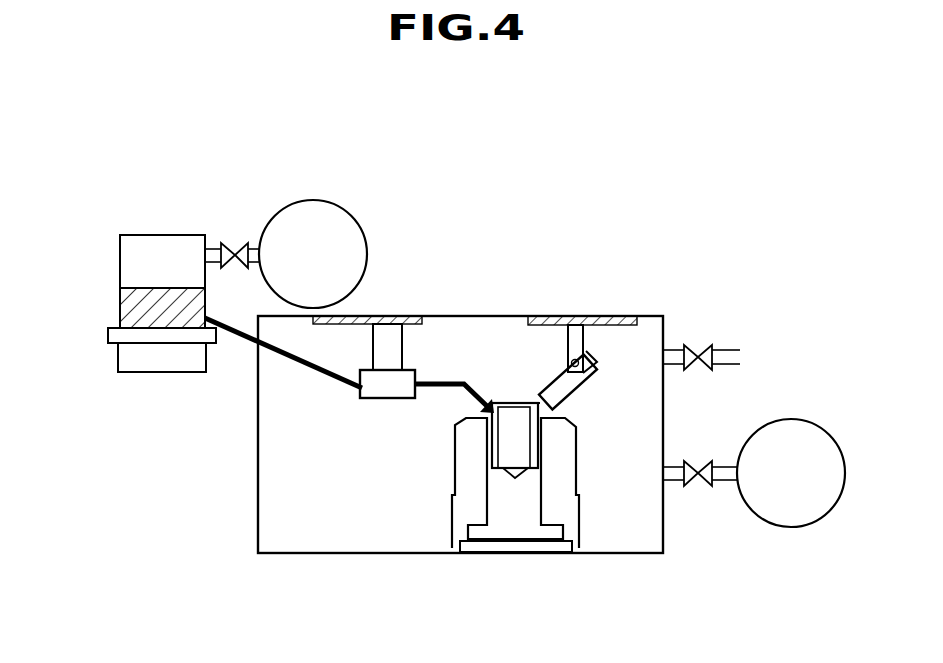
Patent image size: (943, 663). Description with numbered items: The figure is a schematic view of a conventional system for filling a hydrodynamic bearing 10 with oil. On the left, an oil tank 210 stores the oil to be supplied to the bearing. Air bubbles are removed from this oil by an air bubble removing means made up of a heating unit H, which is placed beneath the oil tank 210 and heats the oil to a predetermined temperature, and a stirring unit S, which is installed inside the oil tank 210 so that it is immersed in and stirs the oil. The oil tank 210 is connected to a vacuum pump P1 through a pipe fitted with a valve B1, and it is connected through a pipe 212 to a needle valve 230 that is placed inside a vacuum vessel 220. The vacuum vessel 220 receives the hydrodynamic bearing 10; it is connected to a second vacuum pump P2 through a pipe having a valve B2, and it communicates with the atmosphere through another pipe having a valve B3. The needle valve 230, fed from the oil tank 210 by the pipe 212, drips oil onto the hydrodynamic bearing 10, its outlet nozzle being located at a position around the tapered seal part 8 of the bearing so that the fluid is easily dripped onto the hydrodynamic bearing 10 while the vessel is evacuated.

The oil tank 210 is at (116, 262).
The stirring unit S is at (128, 314).
The heating unit H is at (112, 336).
The pipe 212 is at (236, 330).
The valve B1 is at (228, 247).
The vacuum pump P1 is at (313, 254).
The vacuum vessel 220 is at (432, 308).
The needle valve 230 is at (400, 382).
The valve B3 is at (692, 346).
The valve B2 is at (698, 468).
The vacuum pump P2 is at (791, 473).
The hydrodynamic bearing 10 is at (592, 505).
The tapered seal part 8 is at (490, 406).